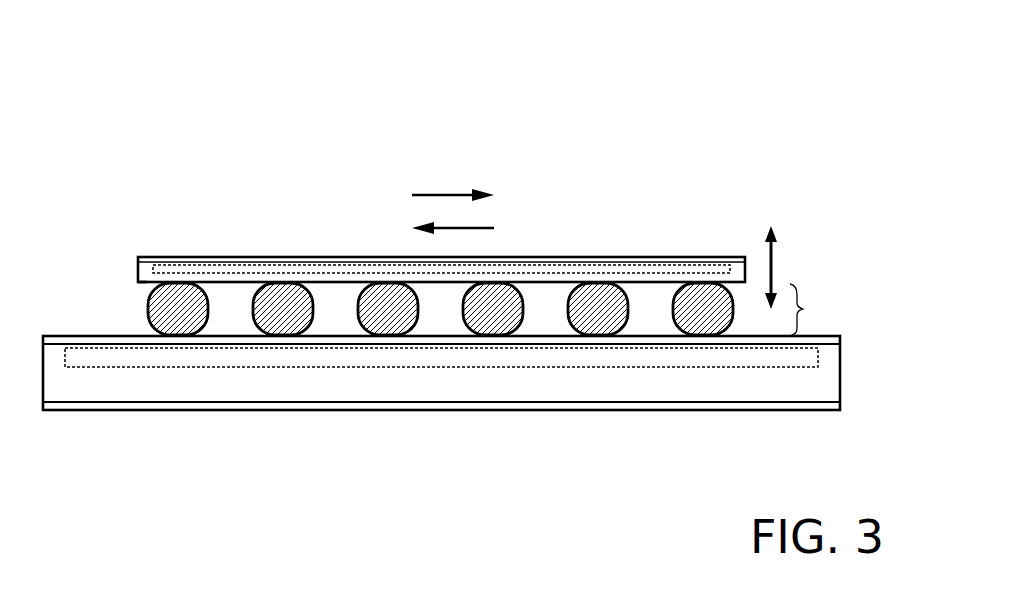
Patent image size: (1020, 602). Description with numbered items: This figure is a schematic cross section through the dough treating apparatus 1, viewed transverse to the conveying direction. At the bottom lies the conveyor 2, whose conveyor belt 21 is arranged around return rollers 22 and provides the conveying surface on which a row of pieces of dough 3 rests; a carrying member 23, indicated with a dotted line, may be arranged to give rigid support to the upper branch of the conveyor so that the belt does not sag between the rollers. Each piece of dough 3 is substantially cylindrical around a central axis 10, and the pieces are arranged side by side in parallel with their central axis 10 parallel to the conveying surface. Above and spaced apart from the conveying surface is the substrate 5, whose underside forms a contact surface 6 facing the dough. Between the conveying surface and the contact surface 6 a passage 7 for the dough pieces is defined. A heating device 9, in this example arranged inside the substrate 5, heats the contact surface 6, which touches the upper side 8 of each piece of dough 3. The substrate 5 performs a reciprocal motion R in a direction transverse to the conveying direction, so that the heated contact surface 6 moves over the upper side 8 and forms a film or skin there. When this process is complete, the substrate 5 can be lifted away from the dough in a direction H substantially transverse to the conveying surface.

The apparatus 1 is at (147, 140).
The conveyor 2 is at (98, 421).
The piece of dough 3 is at (362, 288).
The substrate 5 is at (152, 270).
The contact surface 6 is at (145, 288).
The passage 7 is at (807, 310).
The upper side 8 is at (178, 300).
The heating device 9 is at (673, 268).
The central axis 10 is at (178, 312).
The conveyor belt 21 is at (826, 336).
The return rollers 22 is at (830, 372).
The carrying member 23 is at (458, 357).
The direction H is at (781, 267).
The reciprocal motion R is at (447, 223).